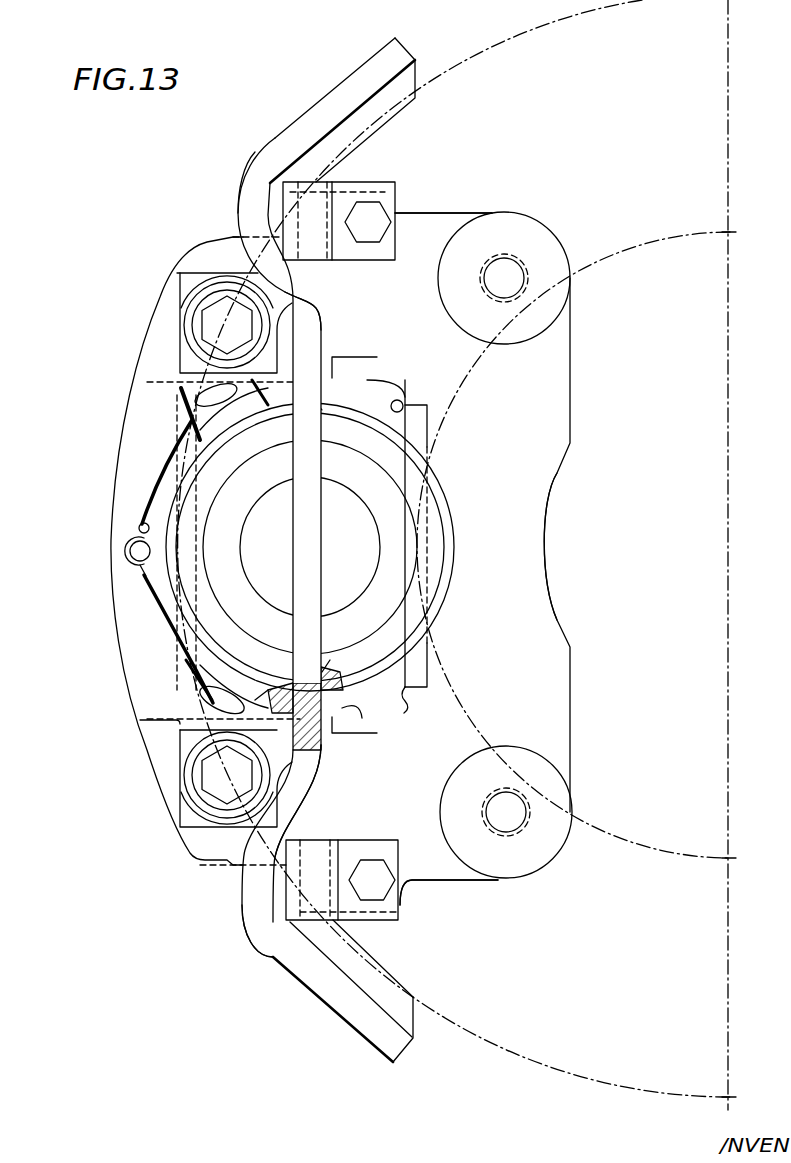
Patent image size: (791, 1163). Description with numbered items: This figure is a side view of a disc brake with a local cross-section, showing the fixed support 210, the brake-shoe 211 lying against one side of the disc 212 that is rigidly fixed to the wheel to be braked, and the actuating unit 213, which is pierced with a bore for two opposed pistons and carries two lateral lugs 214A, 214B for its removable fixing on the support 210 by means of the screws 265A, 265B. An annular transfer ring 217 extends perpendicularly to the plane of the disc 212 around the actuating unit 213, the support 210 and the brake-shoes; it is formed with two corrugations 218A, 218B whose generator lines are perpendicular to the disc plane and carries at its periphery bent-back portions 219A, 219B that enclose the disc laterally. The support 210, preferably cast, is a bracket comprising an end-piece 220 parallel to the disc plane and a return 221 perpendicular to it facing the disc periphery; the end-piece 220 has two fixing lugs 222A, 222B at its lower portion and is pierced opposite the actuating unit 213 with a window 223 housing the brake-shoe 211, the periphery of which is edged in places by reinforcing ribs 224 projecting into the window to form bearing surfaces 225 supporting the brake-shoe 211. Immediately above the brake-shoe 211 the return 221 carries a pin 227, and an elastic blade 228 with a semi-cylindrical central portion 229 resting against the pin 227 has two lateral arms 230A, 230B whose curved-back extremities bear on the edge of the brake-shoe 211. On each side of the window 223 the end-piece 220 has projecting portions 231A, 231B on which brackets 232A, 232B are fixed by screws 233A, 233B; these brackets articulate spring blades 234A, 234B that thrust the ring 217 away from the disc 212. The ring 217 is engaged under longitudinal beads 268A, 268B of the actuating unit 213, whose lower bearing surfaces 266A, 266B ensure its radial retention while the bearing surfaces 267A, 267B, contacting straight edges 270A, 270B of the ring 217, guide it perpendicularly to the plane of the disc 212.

The fixed support 210 is at (578, 688).
The brake-shoe 211 is at (407, 728).
The disc 212 is at (523, 1043).
The actuating unit 213 is at (452, 607).
The lug 214A is at (187, 363).
The lug 214B is at (190, 742).
The annular transfer member or ring 217 is at (284, 537).
The corrugation 218A is at (240, 203).
The corrugation 218B is at (242, 906).
The bent-back portion 219A is at (384, 60).
The bent-back portion 219B is at (372, 1025).
The end-piece 220 is at (528, 543).
The return 221 is at (133, 412).
The fixing lug 222A is at (547, 243).
The fixing lug 222B is at (552, 845).
The window 223 is at (403, 405).
The reinforcing rib 224 is at (377, 358).
The bearing surface 225 is at (380, 372).
The pin 227 is at (128, 553).
The elastic blade 228 is at (134, 585).
The central portion 229 is at (138, 526).
The lateral arm 230A is at (158, 477).
The lateral arm 230B is at (150, 605).
The projecting portion 231A is at (360, 182).
The projecting portion 231B is at (363, 910).
The bracket 232A is at (398, 197).
The bracket 232B is at (402, 912).
The screw 233A is at (437, 213).
The screw 233B is at (403, 902).
The spring blade 234A is at (273, 183).
The spring blade 234B is at (272, 938).
The screw 265A is at (212, 323).
The screw 265B is at (210, 778).
The bearing surface 266A is at (230, 534).
The bearing surface 266B is at (235, 688).
The bearing surface 267A is at (317, 413).
The bearing surface 267B is at (297, 663).
The longitudinal bead 268A is at (283, 368).
The longitudinal bead 268B is at (312, 790).
The straight edge 270A is at (333, 422).
The straight edge 270B is at (344, 647).